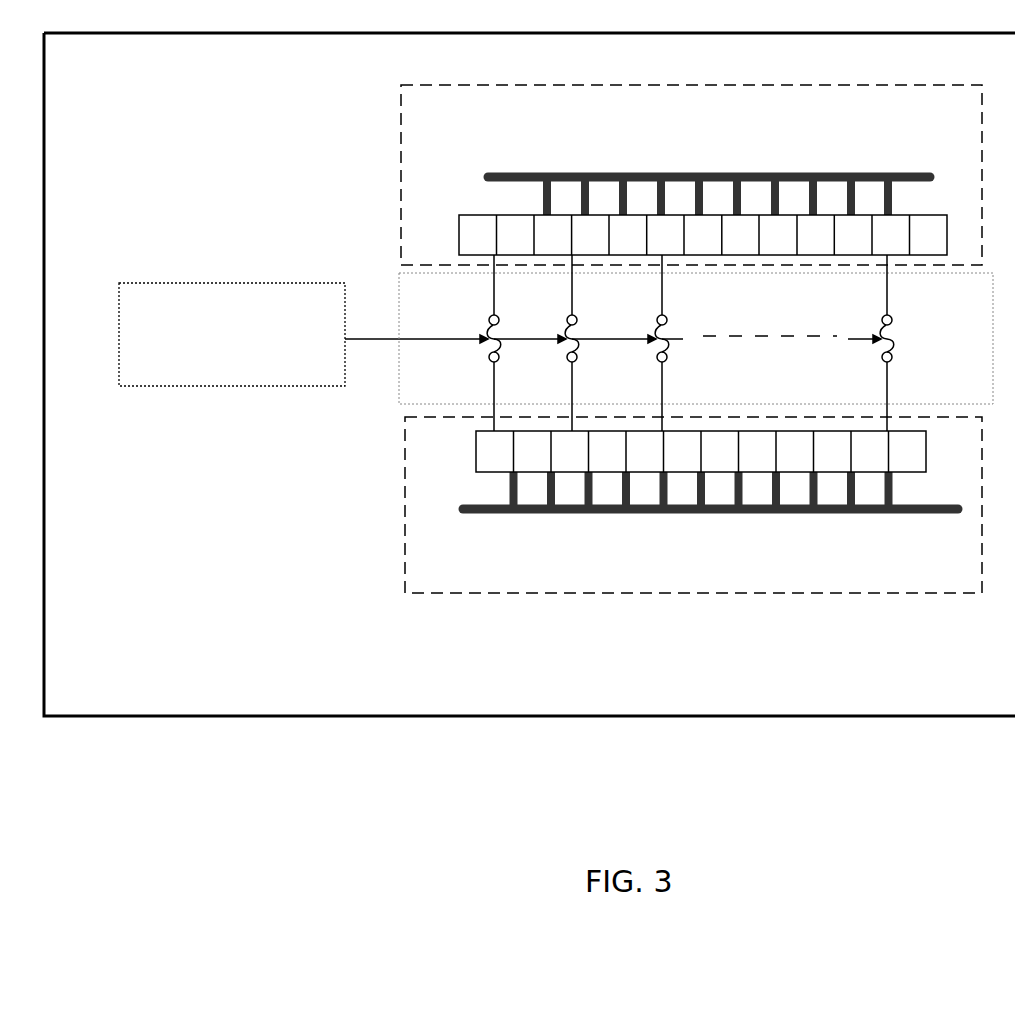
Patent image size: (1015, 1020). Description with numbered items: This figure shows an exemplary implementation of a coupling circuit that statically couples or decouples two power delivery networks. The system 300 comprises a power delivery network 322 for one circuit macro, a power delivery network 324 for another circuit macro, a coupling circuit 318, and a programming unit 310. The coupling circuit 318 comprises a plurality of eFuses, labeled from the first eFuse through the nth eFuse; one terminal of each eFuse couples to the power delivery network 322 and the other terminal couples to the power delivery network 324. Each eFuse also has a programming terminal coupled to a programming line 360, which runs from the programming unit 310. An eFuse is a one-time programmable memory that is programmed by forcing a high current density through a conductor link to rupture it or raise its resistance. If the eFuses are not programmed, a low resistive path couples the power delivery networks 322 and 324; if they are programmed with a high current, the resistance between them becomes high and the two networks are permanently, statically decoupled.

The system 300 is at (551, 669).
The programming unit 310 is at (213, 362).
The coupling circuit 318 is at (968, 342).
The power delivery network 322 is at (680, 140).
The power delivery network 324 is at (680, 557).
The programming line 360 is at (383, 338).